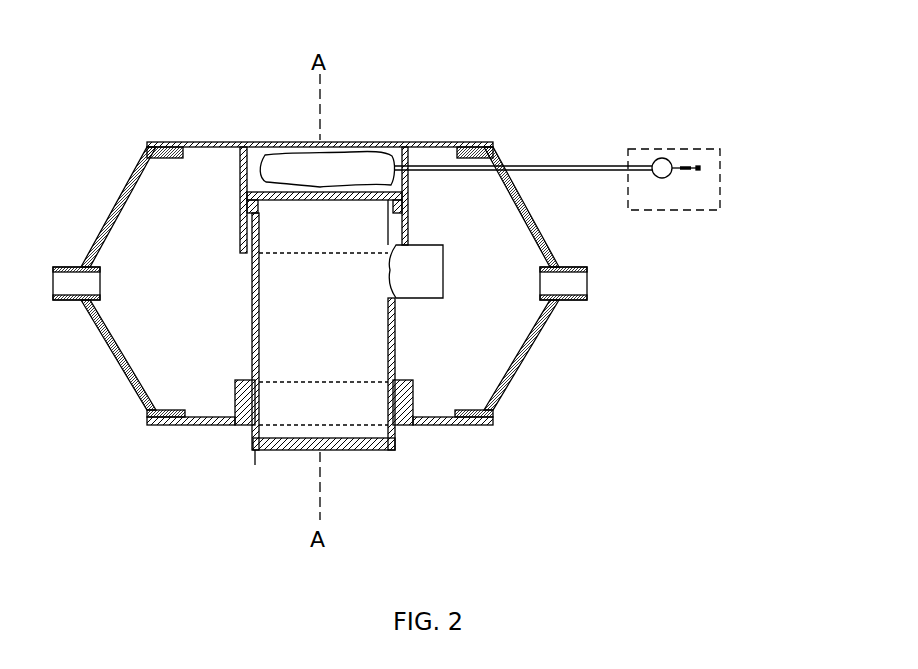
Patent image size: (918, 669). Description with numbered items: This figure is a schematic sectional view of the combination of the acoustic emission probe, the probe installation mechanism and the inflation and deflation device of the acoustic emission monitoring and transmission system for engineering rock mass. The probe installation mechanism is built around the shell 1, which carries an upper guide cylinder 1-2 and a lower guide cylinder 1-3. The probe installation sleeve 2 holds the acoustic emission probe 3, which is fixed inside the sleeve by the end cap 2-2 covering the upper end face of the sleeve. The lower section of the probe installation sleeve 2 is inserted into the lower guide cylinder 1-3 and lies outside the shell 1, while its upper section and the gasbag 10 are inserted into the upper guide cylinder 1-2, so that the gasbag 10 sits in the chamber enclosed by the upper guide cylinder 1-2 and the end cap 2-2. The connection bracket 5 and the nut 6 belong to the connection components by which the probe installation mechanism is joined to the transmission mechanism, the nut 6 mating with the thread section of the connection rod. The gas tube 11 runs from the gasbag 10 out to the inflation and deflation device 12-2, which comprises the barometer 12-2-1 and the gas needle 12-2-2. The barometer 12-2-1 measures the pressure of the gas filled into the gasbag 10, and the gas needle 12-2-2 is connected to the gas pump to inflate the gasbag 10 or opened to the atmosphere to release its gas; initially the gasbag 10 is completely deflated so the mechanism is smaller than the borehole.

The shell 1 is at (293, 145).
The upper guide cylinder 1-2 is at (242, 189).
The lower guide cylinder 1-3 is at (403, 395).
The probe installation sleeve 2 is at (382, 447).
The end cap 2-2 is at (383, 196).
The acoustic emission probe 3 is at (307, 410).
The connection bracket 5 is at (520, 197).
The nut 6 is at (570, 267).
The gasbag 10 is at (345, 165).
The gas tube 11 is at (515, 165).
The inflation and deflation device 12-2 is at (673, 149).
The barometer 12-2-1 is at (665, 172).
The gas needle 12-2-2 is at (698, 168).